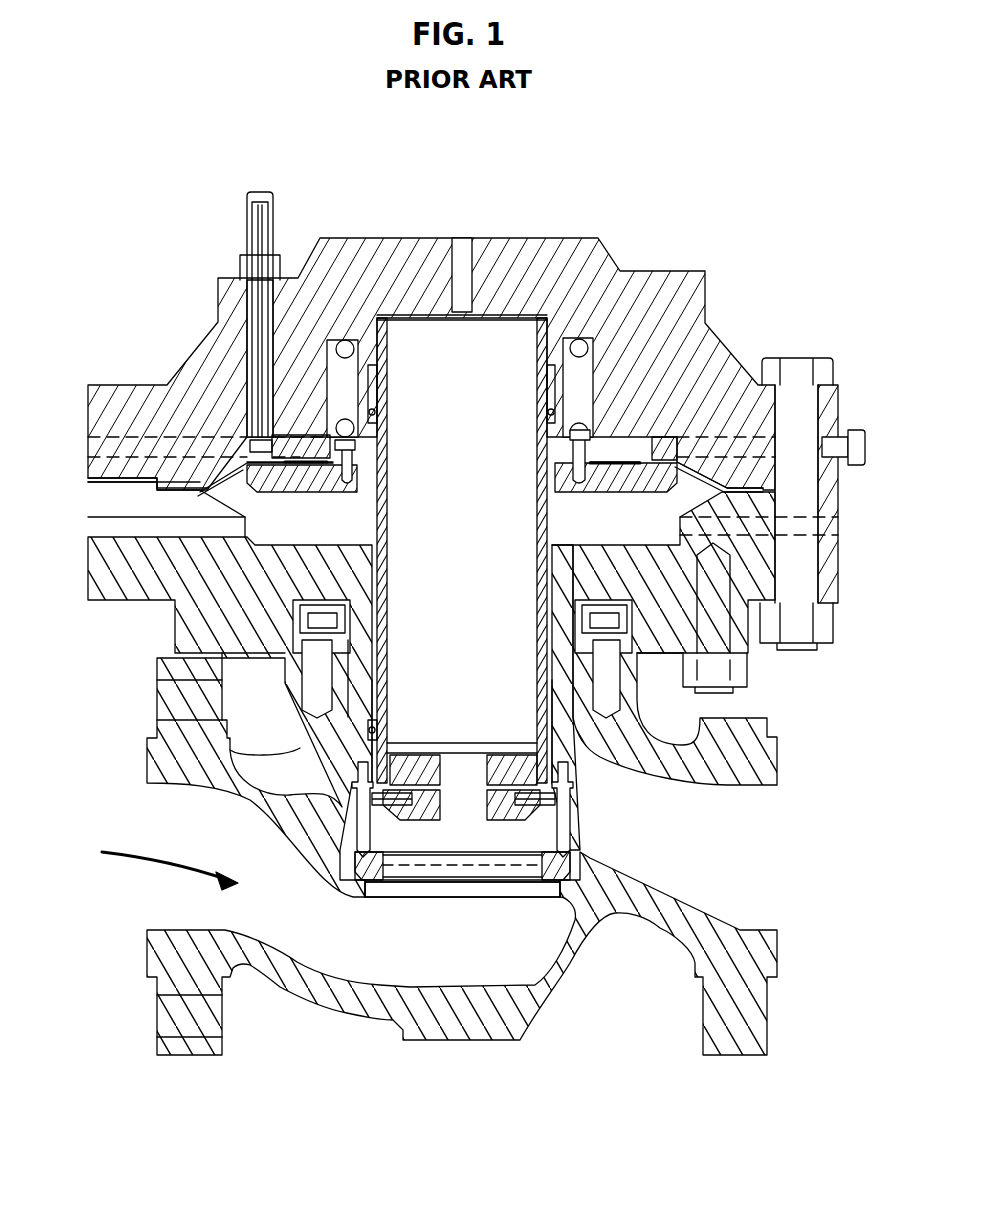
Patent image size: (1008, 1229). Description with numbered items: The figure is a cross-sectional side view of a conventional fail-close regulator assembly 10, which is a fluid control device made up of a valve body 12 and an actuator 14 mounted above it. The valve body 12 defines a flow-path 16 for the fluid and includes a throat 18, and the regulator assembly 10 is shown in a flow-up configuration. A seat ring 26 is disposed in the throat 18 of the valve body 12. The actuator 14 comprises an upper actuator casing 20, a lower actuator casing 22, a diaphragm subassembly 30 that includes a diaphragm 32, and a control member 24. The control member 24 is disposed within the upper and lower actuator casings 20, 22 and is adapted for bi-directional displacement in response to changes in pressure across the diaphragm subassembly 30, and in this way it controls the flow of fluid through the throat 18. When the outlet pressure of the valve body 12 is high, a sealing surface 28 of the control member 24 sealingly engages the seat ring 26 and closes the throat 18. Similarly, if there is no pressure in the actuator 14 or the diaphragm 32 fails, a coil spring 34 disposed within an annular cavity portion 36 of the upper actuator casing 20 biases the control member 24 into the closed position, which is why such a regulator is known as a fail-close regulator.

The regulator assembly 10 is at (657, 192).
The valve body 12 is at (770, 1022).
The actuator 14 is at (705, 277).
The flow-path 16 is at (122, 850).
The throat 18 is at (479, 897).
The upper actuator casing 20 is at (832, 412).
The lower actuator casing 22 is at (836, 572).
The control member 24 is at (552, 519).
The seat ring 26 is at (423, 874).
The sealing surface 28 is at (553, 820).
The diaphragm subassembly 30 is at (605, 430).
The diaphragm 32 is at (240, 498).
The coil spring 34 is at (316, 432).
The annular cavity portion 36 is at (318, 388).